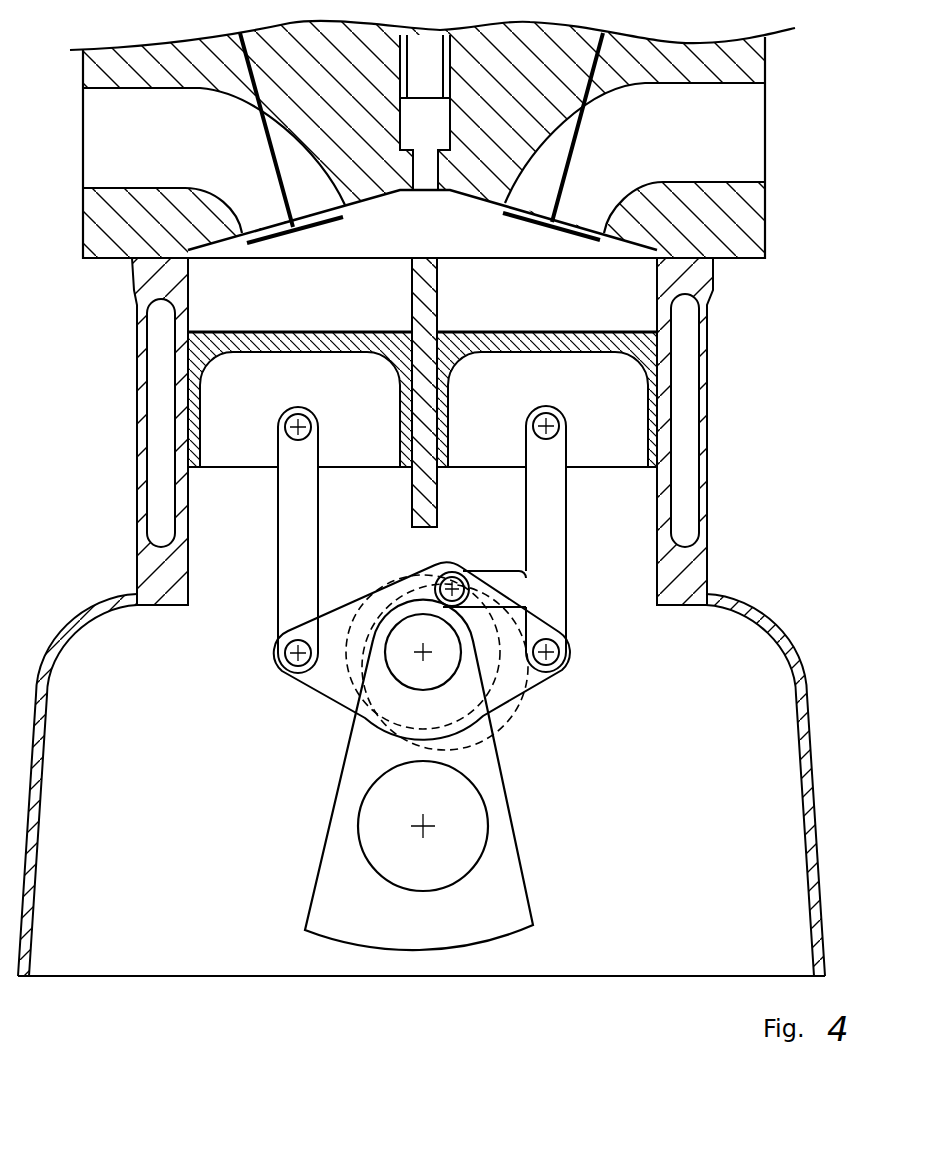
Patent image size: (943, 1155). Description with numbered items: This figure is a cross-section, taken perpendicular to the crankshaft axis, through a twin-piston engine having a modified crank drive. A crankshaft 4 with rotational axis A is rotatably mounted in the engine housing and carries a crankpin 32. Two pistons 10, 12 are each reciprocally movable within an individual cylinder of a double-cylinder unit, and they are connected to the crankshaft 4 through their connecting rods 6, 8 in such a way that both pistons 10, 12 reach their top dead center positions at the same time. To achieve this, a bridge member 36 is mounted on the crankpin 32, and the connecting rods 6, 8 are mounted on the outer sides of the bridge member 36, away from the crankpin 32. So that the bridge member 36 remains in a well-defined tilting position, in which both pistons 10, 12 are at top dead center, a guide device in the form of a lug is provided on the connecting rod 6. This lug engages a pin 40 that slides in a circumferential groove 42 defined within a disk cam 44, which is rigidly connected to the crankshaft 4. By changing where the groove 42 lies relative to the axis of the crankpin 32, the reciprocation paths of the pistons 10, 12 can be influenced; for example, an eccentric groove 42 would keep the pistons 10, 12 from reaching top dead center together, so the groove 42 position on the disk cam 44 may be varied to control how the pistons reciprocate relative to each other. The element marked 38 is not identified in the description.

The crankshaft 4 is at (525, 868).
The connecting rod 6 is at (545, 542).
The connecting rod 8 is at (297, 537).
The piston 10 is at (648, 360).
The piston 12 is at (188, 402).
The crankpin 32 is at (407, 660).
The bridge member 36 is at (533, 673).
The link arm 38 is at (503, 587).
The pin 40 is at (456, 573).
The circumferential groove 42 is at (507, 685).
The disk cam 44 is at (460, 708).
The rotational axis A is at (430, 826).